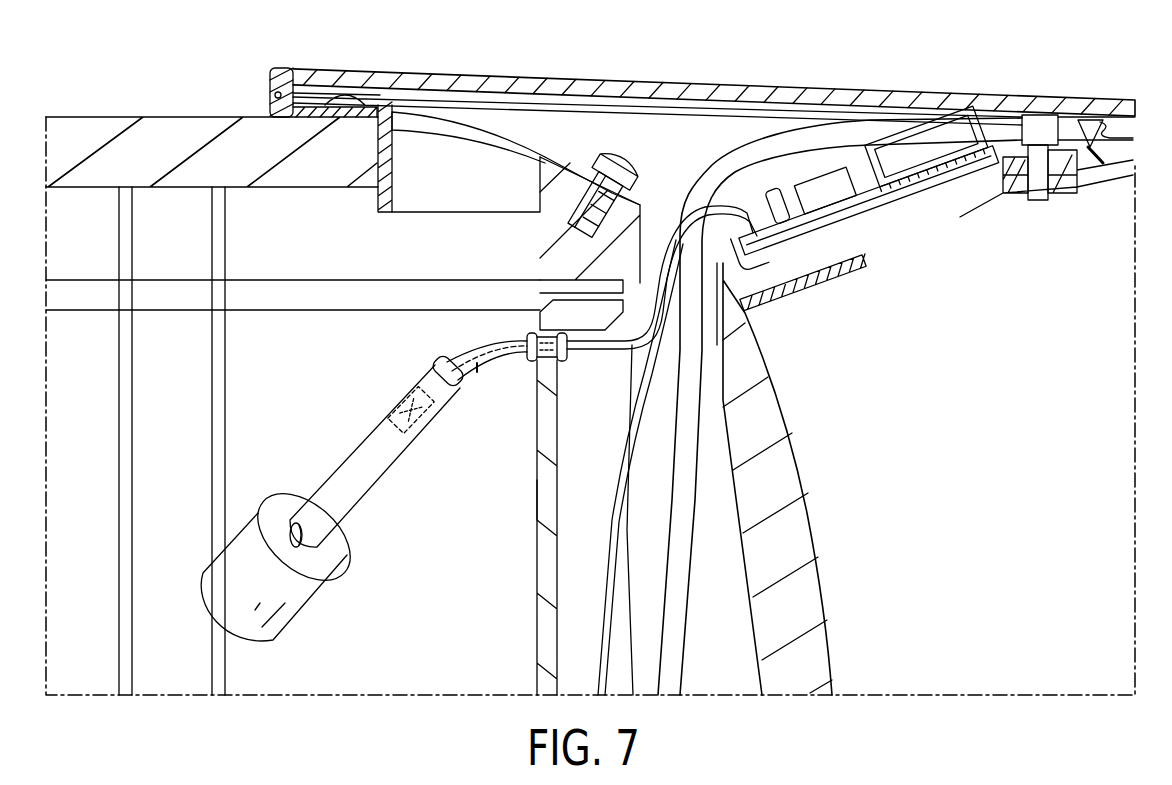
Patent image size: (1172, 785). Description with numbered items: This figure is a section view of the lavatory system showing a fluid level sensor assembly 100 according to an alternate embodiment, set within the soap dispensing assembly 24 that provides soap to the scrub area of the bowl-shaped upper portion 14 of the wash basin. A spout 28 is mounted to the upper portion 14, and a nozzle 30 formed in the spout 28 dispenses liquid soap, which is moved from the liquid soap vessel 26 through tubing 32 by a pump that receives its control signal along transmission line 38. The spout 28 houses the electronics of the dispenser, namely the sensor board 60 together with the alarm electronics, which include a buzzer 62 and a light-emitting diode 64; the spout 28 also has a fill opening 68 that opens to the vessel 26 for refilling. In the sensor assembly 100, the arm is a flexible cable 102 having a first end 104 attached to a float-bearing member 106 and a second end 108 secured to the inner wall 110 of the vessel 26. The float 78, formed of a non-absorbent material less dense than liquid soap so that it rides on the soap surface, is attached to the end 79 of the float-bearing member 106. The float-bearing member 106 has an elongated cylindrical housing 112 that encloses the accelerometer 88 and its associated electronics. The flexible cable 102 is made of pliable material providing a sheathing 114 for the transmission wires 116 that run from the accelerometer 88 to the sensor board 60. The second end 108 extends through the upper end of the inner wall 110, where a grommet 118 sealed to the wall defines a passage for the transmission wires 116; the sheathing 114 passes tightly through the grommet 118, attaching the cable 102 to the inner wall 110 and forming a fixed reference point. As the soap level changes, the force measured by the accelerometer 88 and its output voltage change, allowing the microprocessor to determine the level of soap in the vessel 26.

The upper portion 14 is at (181, 128).
The soap dispensing assembly 24 is at (733, 66).
The liquid soap vessel 26 is at (558, 570).
The spout 28 is at (640, 125).
The nozzle 30 is at (1035, 200).
The tubing 32 is at (792, 133).
The transmission line 38 is at (611, 473).
The sensor board 60 is at (937, 213).
The buzzer 62 is at (866, 185).
The light-emitting diode 64 is at (769, 197).
The fill opening 68 is at (440, 123).
The float 78 is at (266, 597).
The end of float-bearing member 79 is at (291, 522).
The accelerometer 88 is at (396, 398).
The fluid level sensor assembly 100 is at (348, 509).
The flexible cable 102 is at (445, 303).
The first end 104 is at (458, 385).
The float-bearing member 106 is at (392, 456).
The second end 108 is at (522, 366).
The inner wall 110 is at (543, 500).
The elongated cylindrical housing 112 is at (350, 498).
The sheathing 114 is at (497, 340).
The transmission wires 116 is at (479, 373).
The grommet 118 is at (517, 333).